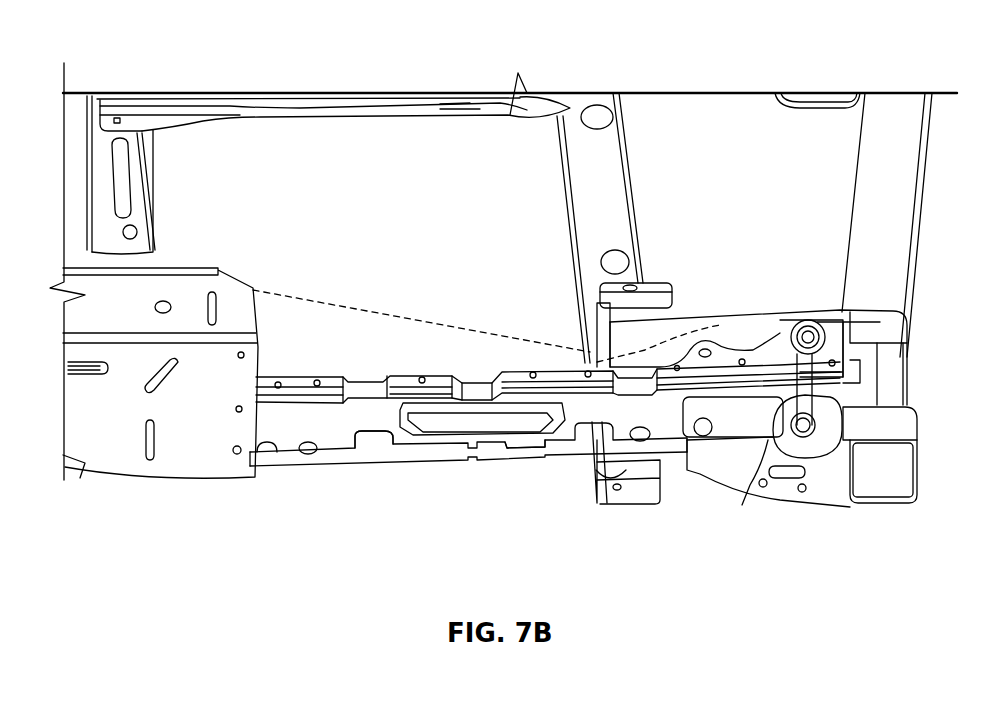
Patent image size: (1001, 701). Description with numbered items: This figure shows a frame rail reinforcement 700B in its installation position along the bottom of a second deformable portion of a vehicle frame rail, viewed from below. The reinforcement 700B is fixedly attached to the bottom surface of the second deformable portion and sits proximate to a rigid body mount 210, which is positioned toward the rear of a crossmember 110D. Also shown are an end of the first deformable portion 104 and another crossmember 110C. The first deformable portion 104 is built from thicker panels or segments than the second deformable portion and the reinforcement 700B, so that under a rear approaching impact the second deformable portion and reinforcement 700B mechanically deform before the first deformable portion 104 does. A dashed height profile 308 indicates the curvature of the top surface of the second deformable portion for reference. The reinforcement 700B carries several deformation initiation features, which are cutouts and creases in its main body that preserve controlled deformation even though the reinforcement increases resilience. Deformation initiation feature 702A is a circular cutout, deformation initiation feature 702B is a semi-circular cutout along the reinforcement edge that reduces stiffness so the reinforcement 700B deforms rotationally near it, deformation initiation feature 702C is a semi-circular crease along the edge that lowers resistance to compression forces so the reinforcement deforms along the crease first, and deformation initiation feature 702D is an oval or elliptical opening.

The first deformable portion 104 is at (120, 310).
The crossmember 110C is at (605, 173).
The crossmember 110D is at (891, 157).
The height profile 308 is at (362, 315).
The frame rail reinforcement 700B is at (270, 420).
The deformation initiation feature 702A is at (310, 455).
The deformation initiation feature 702B is at (367, 436).
The deformation initiation feature 702C is at (465, 450).
The deformation initiation feature 702D is at (517, 422).
The rigid body mount 210 is at (790, 420).